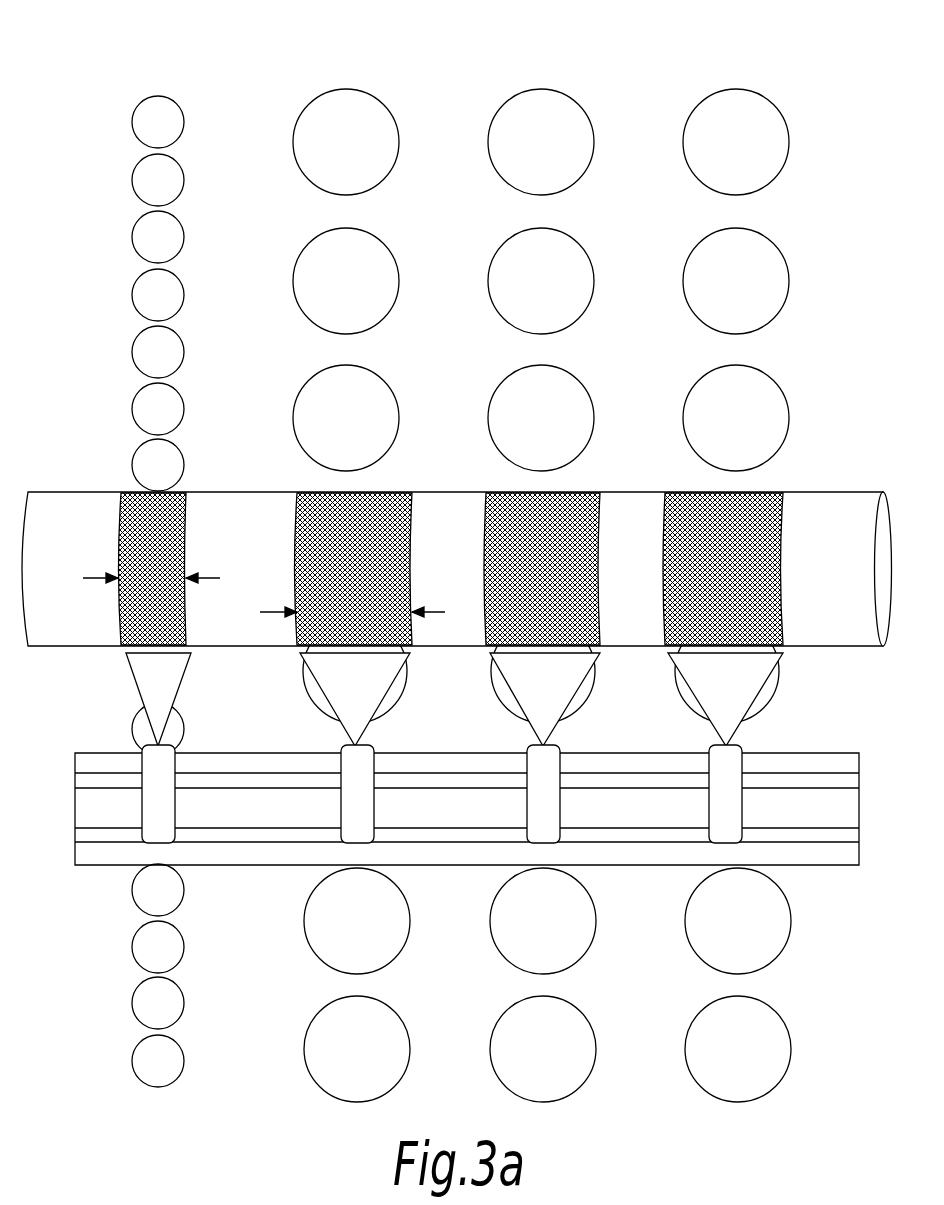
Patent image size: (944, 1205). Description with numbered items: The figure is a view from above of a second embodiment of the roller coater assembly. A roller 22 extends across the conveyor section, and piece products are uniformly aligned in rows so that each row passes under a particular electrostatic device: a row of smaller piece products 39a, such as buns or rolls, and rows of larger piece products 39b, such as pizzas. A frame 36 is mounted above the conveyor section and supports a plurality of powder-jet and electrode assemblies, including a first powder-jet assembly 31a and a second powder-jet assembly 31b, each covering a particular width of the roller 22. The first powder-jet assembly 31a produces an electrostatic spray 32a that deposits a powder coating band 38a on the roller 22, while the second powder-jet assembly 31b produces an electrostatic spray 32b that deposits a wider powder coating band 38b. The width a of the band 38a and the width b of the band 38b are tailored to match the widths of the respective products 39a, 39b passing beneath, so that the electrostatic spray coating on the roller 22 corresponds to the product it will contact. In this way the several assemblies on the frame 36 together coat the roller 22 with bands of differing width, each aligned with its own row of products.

The roller 22 is at (443, 492).
The powder-jet assembly 31a is at (150, 807).
The powder-jet assembly 31b is at (360, 777).
The electrostatic spray 32a is at (122, 692).
The electrostatic spray 32b is at (345, 694).
The frame 36 is at (840, 843).
The powder coating band 38a is at (122, 494).
The powder coating band 38b is at (297, 494).
The piece products 39a is at (138, 110).
The piece products 39b is at (305, 112).
The width of coating band a is at (100, 578).
The width of coating band b is at (276, 612).